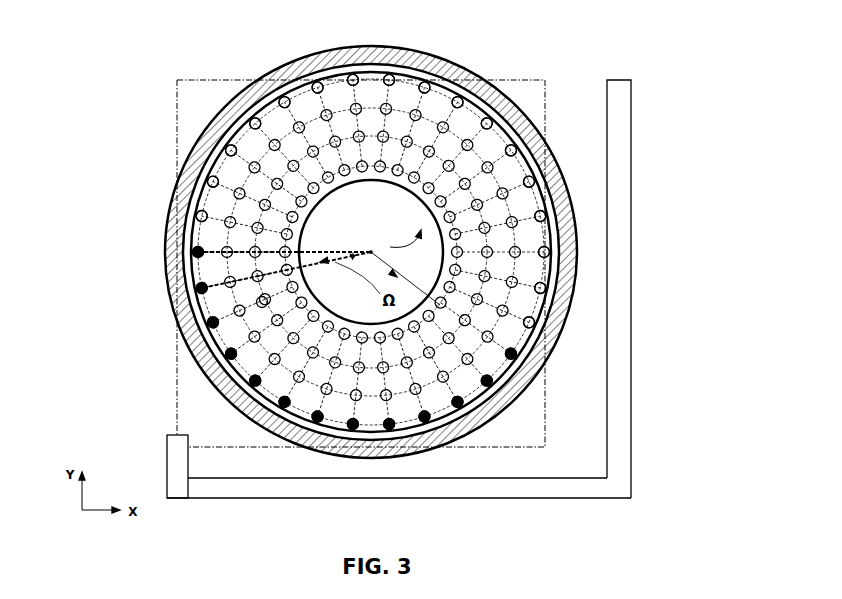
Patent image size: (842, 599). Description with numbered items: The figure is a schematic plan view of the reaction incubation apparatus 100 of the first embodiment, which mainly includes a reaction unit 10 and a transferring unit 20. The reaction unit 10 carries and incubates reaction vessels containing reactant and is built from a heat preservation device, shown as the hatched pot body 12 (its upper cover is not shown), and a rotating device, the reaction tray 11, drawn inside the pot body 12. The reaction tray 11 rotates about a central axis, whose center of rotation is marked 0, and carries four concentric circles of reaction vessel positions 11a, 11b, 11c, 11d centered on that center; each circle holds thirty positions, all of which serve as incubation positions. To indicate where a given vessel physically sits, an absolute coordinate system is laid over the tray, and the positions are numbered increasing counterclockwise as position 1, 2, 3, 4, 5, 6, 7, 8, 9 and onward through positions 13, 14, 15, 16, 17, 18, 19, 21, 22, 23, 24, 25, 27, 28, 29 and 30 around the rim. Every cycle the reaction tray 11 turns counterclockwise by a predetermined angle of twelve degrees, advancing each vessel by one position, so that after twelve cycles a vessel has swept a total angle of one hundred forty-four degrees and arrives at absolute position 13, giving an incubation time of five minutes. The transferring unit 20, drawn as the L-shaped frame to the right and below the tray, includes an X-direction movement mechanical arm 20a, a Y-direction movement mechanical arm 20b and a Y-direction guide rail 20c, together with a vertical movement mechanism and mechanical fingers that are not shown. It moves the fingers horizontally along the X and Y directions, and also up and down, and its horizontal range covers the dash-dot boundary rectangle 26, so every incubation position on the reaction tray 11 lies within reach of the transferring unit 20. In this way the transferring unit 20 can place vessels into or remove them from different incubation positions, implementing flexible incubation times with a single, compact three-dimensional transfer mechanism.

The reaction incubation apparatus 100 is at (392, 271).
The reaction unit 10 is at (136, 140).
The reaction tray 11 is at (310, 259).
The first circle of reaction vessel positions 11a is at (290, 298).
The second circle of reaction vessel positions 11b is at (258, 288).
The third circle of reaction vessel positions 11c is at (280, 266).
The fourth circle of reaction vessel positions 11d is at (190, 228).
The pot body 12 is at (258, 305).
The transferring unit 20 is at (392, 306).
The X-direction movement mechanical arm 20a is at (178, 462).
The Y-direction movement mechanical arm 20b is at (375, 499).
The Y-direction guide rail 20c is at (614, 295).
The boundary rectangle 26 is at (176, 92).
The origin / rotation center 0 is at (350, 246).
The absolute position 1 is at (174, 252).
The absolute position 2 is at (179, 294).
The absolute position 3 is at (191, 333).
The absolute position 4 is at (212, 368).
The absolute position 5 is at (240, 399).
The absolute position 6 is at (273, 420).
The absolute position 7 is at (311, 438).
The absolute position 8 is at (351, 447).
The absolute position 9 is at (391, 447).
The absolute position 13 is at (532, 368).
The absolute position 14 is at (553, 333).
The absolute position 15 is at (566, 294).
The absolute position 16 is at (571, 252).
The absolute position 17 is at (566, 210).
The absolute position 18 is at (553, 171).
The absolute position 19 is at (532, 135).
The absolute position 21 is at (471, 80).
The absolute position 22 is at (434, 63).
The absolute position 23 is at (393, 54).
The absolute position 24 is at (348, 54).
The absolute position 25 is at (308, 63).
The absolute position 27 is at (237, 104).
The absolute position 28 is at (210, 135).
The absolute position 29 is at (189, 171).
The absolute position 30 is at (176, 210).